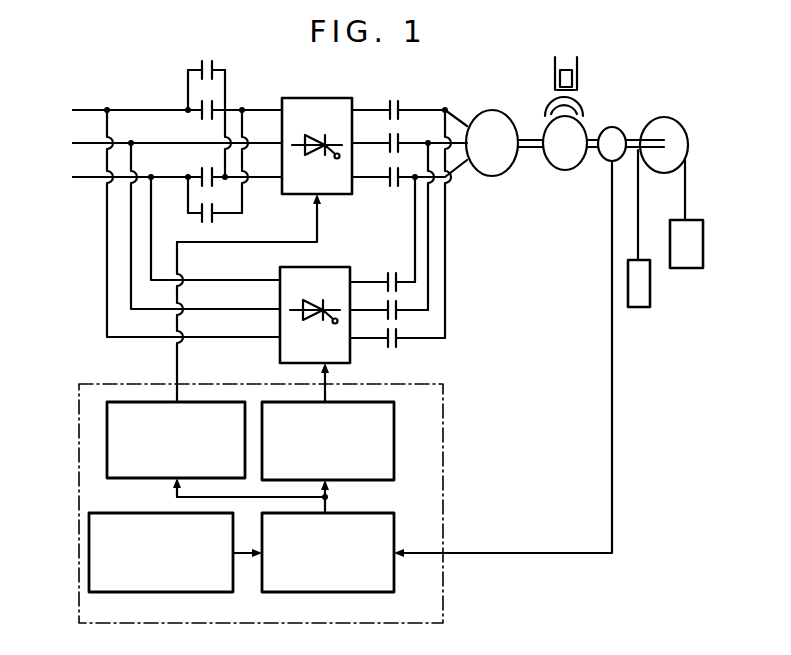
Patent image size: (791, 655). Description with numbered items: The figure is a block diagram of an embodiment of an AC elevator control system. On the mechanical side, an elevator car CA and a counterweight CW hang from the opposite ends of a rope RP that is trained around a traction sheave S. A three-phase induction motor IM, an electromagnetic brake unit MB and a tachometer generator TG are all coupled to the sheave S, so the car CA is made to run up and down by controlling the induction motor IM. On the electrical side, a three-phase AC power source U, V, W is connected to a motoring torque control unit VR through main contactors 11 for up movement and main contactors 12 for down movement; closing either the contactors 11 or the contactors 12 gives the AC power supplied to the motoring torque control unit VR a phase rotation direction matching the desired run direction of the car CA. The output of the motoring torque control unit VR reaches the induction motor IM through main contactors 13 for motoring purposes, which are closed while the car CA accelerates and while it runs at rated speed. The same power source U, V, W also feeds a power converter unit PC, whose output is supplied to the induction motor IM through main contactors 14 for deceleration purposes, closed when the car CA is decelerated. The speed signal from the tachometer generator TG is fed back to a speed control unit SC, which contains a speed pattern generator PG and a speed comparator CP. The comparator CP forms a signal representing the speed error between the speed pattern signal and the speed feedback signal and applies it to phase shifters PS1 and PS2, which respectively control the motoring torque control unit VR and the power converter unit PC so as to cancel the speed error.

The main contactors for up movement 11 is at (200, 124).
The main contactors for down movement 12 is at (211, 58).
The main contactors for motoring purposes 13 is at (389, 110).
The main contactors for deceleration purposes 14 is at (389, 276).
The motoring torque control unit VR is at (308, 99).
The power converter unit PC is at (320, 270).
The three-phase induction motor IM is at (493, 110).
The electromagnetic brake unit MB is at (552, 100).
The tachometer generator TG is at (611, 128).
The traction sheave S is at (679, 118).
The rope RP is at (685, 193).
The elevator car CA is at (684, 272).
The counterweight CW is at (640, 310).
The speed control unit SC is at (79, 421).
The phase shifter PS1 is at (130, 481).
The phase shifter PS2 is at (410, 421).
The speed pattern generator PG is at (200, 596).
The speed comparator CP is at (362, 596).
The three-phase AC power source phase U is at (76, 112).
The three-phase AC power source phase V is at (88, 145).
The three-phase AC power source phase W is at (95, 179).